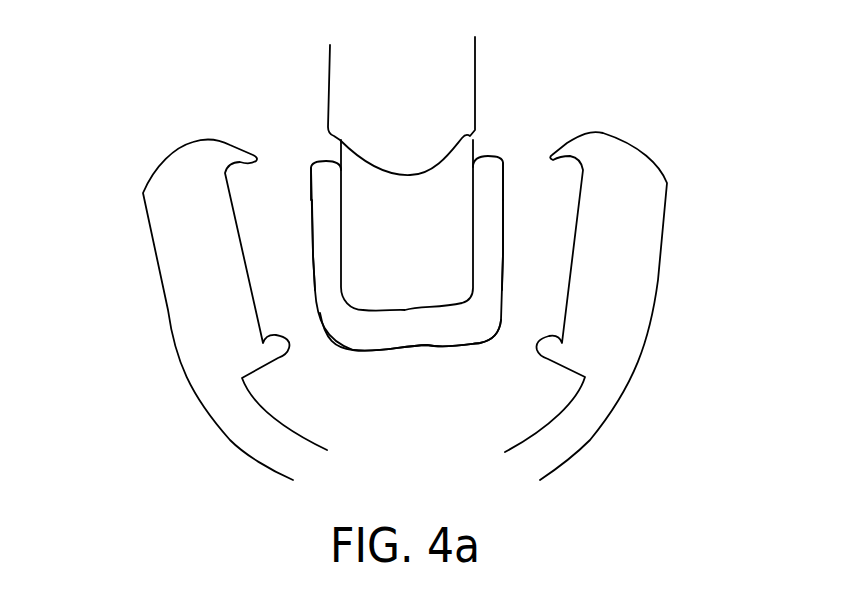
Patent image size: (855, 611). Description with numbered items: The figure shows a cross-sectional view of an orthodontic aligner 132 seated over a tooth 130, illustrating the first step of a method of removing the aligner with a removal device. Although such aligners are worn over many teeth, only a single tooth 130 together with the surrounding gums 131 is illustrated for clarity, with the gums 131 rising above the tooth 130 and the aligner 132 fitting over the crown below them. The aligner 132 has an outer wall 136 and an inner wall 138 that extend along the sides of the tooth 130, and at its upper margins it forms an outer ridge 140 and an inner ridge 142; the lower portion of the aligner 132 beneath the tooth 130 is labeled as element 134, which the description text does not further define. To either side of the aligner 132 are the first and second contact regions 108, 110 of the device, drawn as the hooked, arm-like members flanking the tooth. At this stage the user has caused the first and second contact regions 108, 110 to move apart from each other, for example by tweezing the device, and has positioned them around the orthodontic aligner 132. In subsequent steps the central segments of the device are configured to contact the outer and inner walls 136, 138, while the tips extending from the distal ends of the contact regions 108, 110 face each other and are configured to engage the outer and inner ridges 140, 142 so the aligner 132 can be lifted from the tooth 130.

The outer contact region 108 is at (175, 283).
The inner contact region 110 is at (640, 282).
The tooth 130 is at (426, 235).
The gums 131 is at (423, 116).
The orthodontic aligner 132 is at (400, 344).
The bottom wall 134 is at (433, 327).
The outer wall 136 is at (323, 258).
The inner wall 138 is at (490, 253).
The outer ridge 140 is at (325, 170).
The inner ridge 142 is at (488, 175).